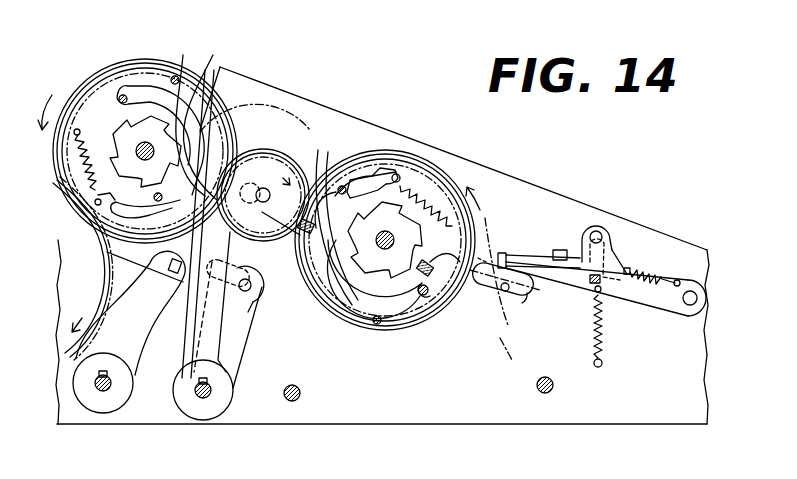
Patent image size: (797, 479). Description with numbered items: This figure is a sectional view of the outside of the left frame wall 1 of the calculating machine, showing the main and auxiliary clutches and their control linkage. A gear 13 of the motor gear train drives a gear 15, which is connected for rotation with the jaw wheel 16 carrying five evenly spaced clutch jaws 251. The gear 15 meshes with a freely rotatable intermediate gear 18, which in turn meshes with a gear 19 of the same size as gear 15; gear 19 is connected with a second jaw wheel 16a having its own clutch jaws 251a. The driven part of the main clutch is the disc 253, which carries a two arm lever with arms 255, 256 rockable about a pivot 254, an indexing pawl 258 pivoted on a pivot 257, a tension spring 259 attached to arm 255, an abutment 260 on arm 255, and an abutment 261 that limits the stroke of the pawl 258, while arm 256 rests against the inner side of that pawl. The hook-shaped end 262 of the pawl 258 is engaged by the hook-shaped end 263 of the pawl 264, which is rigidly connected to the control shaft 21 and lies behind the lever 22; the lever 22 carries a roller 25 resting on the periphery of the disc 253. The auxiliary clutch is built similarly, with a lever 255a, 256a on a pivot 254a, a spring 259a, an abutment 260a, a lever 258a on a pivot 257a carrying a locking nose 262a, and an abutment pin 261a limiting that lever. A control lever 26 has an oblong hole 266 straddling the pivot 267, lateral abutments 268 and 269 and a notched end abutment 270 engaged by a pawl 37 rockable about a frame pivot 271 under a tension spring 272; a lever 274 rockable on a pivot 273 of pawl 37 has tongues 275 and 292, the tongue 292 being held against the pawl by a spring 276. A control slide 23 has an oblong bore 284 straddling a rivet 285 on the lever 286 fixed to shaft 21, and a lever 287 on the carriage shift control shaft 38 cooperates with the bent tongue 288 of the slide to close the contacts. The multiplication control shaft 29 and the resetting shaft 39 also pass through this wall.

The base plate 1 is at (458, 428).
The gear 13 is at (62, 294).
The gear 15 is at (80, 90).
The jaw wheel 16 is at (162, 132).
The jaw wheel 16a is at (396, 273).
The intermediate gear 18 is at (276, 150).
The gear 19 is at (374, 150).
The control shaft 21 is at (206, 400).
The lever 22 is at (182, 360).
The control slide 23 is at (127, 252).
The roller 25 is at (250, 118).
The control lever 26 is at (508, 295).
The control shaft 29 is at (547, 394).
The pawl 37 is at (652, 300).
The control shaft 38 is at (106, 393).
The shaft 39 is at (294, 402).
The clutch jaws 251 is at (156, 193).
The clutch jaws 251a is at (386, 233).
The disc 253 is at (118, 72).
The pivot 254 is at (160, 201).
The pivot 254a is at (343, 186).
The lever arm 255 is at (125, 206).
The lever arm 255a is at (390, 180).
The lever arm 256 is at (222, 50).
The lever arm 256a is at (346, 197).
The pivot 257 is at (118, 101).
The pivot 257a is at (428, 296).
The indexing pawl 258 is at (147, 90).
The lever 258a is at (403, 303).
The tension spring 259 is at (86, 148).
The tension spring 259a is at (478, 170).
The abutment 260 is at (110, 193).
The abutment 260a is at (428, 200).
The abutment 261 is at (178, 77).
The abutment pin 261a is at (379, 326).
The hook-shaped end 262 is at (250, 152).
The locking nose 262a is at (323, 195).
The hook-shaped end 263 is at (300, 236).
The pawl 264 is at (190, 318).
The oblong hole 266 is at (505, 256).
The pivot 267 is at (518, 296).
The abutment 268 is at (262, 292).
The abutment 269 is at (483, 253).
The notched end abutment 270 is at (439, 259).
The pivot 271 is at (702, 303).
The tension spring 272 is at (606, 345).
The pivot 273 is at (597, 229).
The lever 274 is at (620, 256).
The tongue 275 is at (592, 292).
The spring 276 is at (660, 272).
The oblong bore 284 is at (252, 282).
The rivet 285 is at (258, 302).
The lever 286 is at (240, 330).
The lever 287 is at (130, 400).
The tongue 288 is at (174, 278).
The tongue 292 is at (562, 250).